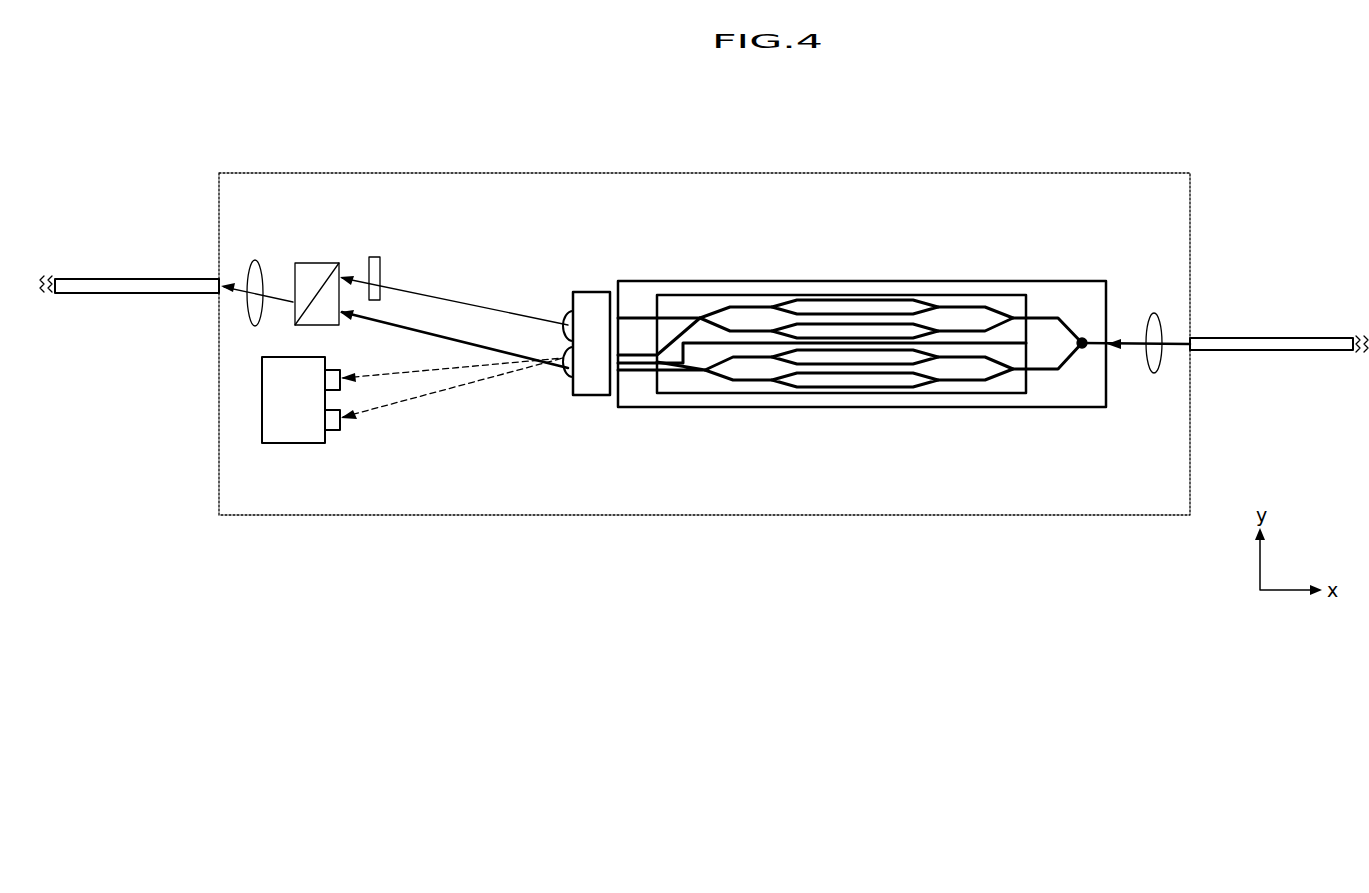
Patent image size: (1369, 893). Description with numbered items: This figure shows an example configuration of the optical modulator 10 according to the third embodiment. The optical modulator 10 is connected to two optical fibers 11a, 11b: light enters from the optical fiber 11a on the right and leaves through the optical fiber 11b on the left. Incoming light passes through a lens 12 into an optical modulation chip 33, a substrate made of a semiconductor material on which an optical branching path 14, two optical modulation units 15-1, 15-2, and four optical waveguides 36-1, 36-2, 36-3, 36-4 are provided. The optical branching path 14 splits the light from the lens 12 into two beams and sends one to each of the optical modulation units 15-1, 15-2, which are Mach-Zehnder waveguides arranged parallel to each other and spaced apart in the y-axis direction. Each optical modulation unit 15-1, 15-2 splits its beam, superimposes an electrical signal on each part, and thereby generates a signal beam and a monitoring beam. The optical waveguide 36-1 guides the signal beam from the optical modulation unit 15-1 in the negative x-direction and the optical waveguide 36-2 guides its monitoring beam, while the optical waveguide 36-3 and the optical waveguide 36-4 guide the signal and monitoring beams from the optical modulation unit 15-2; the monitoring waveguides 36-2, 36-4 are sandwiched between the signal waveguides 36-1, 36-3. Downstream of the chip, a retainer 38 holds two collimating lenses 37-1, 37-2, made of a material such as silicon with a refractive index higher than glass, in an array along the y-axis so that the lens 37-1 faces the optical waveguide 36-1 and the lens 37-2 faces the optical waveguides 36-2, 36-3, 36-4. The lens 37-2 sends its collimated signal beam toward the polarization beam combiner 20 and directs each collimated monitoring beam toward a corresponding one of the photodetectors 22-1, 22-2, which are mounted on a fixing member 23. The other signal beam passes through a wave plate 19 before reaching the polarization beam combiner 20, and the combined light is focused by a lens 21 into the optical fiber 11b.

The optical modulator 10 is at (1088, 173).
The optical fiber 11a is at (1258, 338).
The optical fiber 11b is at (130, 278).
The lens 12 is at (1153, 313).
The optical branching path 14 is at (1083, 350).
The optical modulation unit 15-1 is at (953, 296).
The optical modulation unit 15-2 is at (958, 393).
The wave plate 19 is at (375, 257).
The polarization beam combiner 20 is at (315, 263).
The lens 21 is at (255, 262).
The photodetector 22-1 is at (340, 370).
The photodetector 22-2 is at (340, 432).
The fixing member 23 is at (292, 443).
The optical modulation chip 33 is at (1088, 281).
The optical waveguide 36-1 is at (630, 318).
The optical waveguide 36-2 is at (647, 352).
The optical waveguide 36-3 is at (620, 372).
The optical waveguide 36-4 is at (645, 364).
The lens 37-1 is at (570, 311).
The lens 37-2 is at (570, 377).
The retainer 38 is at (593, 395).